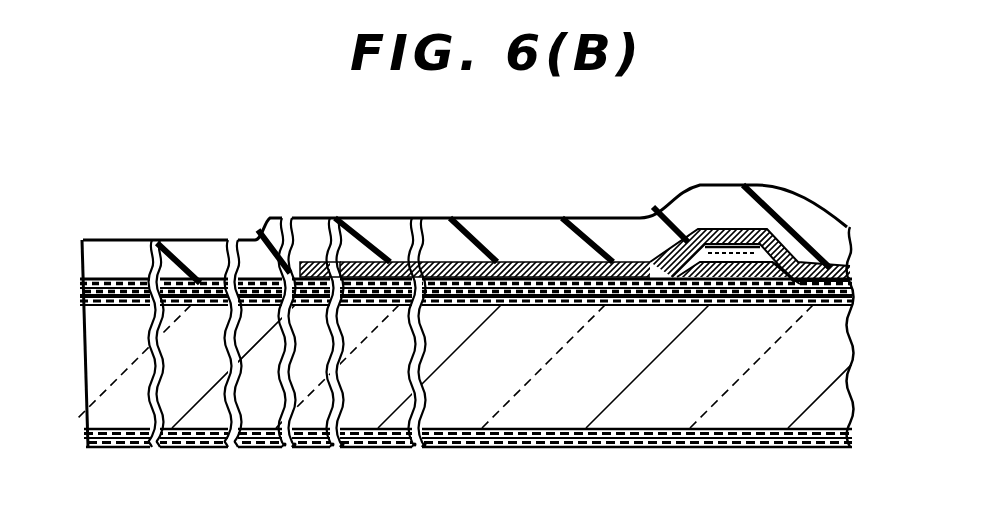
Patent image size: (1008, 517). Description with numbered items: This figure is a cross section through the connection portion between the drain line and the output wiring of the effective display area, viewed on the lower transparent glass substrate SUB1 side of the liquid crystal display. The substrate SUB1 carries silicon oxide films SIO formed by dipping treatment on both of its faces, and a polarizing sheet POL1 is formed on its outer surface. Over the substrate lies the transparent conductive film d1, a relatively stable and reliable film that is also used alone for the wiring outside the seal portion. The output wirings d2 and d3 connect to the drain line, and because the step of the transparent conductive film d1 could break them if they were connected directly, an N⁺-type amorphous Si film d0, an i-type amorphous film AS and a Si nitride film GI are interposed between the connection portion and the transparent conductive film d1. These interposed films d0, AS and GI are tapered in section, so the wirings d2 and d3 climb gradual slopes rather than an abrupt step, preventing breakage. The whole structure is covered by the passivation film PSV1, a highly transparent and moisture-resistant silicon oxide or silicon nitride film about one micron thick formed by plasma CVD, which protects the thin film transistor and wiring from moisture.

The transparent conductive film d1 is at (97, 283).
The output wiring d2 is at (307, 262).
The output wiring d3 is at (364, 261).
The N⁺-type amorphous Si film d0 is at (743, 245).
The passivation film PSV1 is at (475, 227).
The i-type amorphous film AS is at (717, 248).
The Si nitride film GI is at (760, 283).
The lower transparent glass substrate SUB1 is at (489, 332).
The silicon oxide film SIO is at (183, 310).
The polarizing sheet POL1 is at (800, 448).